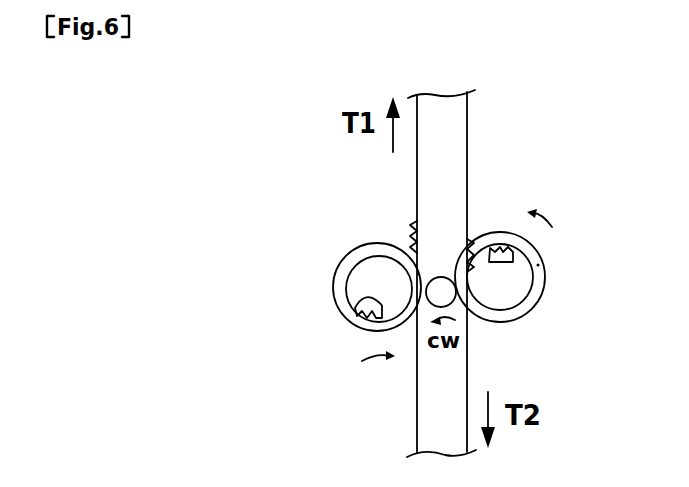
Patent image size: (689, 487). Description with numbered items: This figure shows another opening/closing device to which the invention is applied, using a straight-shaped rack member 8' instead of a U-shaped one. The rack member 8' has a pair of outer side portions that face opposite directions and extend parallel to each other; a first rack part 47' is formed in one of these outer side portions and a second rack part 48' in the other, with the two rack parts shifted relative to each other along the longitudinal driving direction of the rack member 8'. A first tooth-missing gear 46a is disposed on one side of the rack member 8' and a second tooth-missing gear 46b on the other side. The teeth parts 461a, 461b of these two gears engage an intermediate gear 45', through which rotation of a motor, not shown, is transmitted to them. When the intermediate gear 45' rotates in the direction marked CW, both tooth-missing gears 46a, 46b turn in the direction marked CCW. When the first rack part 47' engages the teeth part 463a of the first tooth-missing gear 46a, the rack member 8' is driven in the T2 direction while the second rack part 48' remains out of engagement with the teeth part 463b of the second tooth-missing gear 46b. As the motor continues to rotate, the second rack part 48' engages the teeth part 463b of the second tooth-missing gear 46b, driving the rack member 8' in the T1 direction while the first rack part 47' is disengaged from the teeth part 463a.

The rack member 8' is at (484, 271).
The second rack part 48' is at (319, 278).
The first rack part 47' is at (560, 258).
The teeth part 461b is at (347, 265).
The second tooth-missing gear 46b is at (368, 284).
The teeth part 463b is at (360, 308).
The teeth part 461a is at (539, 265).
The first tooth-missing gear 46a is at (490, 290).
The teeth part 463a is at (513, 257).
The intermediate gear 45' is at (505, 337).